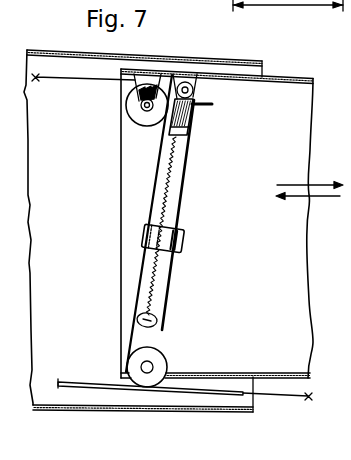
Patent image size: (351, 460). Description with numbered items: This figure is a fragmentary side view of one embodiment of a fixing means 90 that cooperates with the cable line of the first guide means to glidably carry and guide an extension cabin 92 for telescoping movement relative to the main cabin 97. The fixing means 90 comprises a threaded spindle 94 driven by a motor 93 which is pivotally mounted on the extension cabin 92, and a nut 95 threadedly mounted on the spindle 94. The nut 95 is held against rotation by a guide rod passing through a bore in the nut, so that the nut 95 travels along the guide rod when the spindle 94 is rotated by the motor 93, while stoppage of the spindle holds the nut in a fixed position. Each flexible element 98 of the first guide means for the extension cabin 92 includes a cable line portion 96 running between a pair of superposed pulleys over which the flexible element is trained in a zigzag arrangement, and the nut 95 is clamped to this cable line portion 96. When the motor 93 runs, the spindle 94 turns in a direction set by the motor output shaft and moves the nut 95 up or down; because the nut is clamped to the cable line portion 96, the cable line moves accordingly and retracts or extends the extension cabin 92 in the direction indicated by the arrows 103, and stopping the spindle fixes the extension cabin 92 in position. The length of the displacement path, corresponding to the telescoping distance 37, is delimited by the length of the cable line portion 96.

The distance of the telescoping movement 37 is at (291, 7).
The fixing means 90 is at (218, 118).
The extension cabin 92 is at (309, 288).
The motor 93 is at (186, 131).
The threaded spindle 94 is at (172, 195).
The nut 95 is at (183, 243).
The cable line portion 96 is at (155, 180).
The main cabin 97 is at (88, 396).
The flexible element 98 is at (58, 80).
The arrows 103 is at (318, 198).